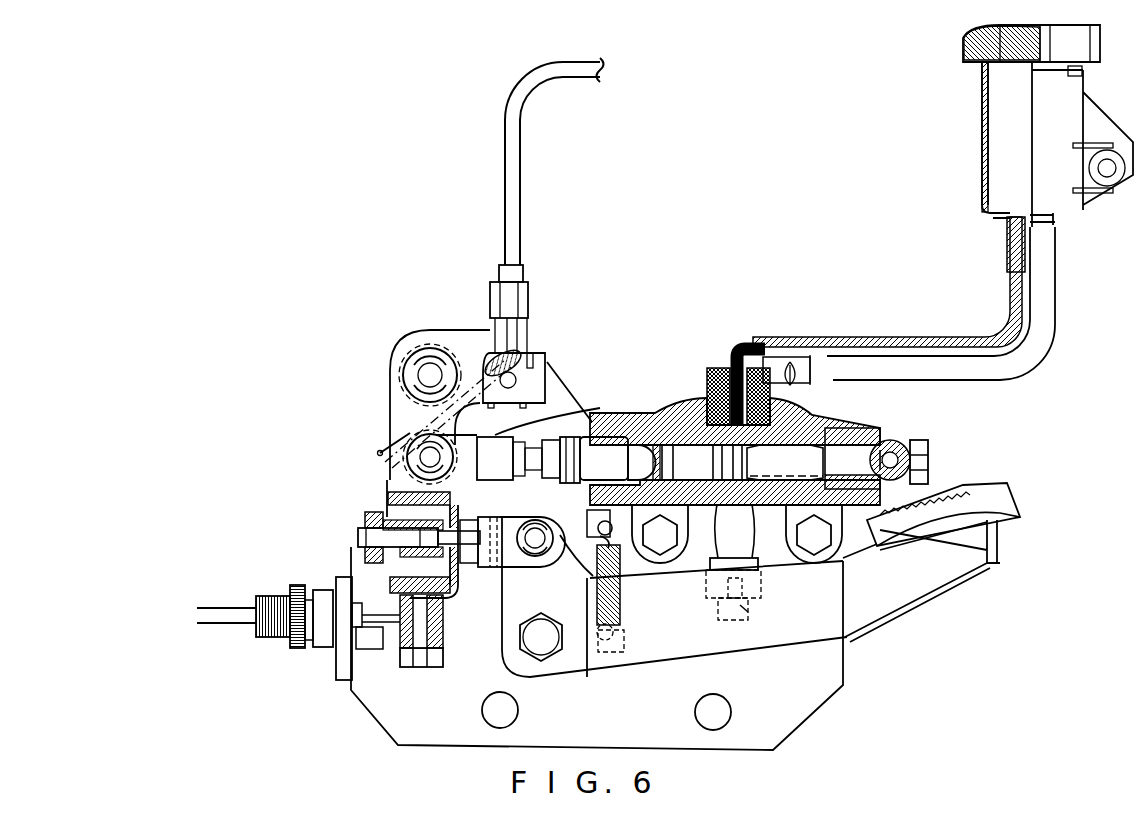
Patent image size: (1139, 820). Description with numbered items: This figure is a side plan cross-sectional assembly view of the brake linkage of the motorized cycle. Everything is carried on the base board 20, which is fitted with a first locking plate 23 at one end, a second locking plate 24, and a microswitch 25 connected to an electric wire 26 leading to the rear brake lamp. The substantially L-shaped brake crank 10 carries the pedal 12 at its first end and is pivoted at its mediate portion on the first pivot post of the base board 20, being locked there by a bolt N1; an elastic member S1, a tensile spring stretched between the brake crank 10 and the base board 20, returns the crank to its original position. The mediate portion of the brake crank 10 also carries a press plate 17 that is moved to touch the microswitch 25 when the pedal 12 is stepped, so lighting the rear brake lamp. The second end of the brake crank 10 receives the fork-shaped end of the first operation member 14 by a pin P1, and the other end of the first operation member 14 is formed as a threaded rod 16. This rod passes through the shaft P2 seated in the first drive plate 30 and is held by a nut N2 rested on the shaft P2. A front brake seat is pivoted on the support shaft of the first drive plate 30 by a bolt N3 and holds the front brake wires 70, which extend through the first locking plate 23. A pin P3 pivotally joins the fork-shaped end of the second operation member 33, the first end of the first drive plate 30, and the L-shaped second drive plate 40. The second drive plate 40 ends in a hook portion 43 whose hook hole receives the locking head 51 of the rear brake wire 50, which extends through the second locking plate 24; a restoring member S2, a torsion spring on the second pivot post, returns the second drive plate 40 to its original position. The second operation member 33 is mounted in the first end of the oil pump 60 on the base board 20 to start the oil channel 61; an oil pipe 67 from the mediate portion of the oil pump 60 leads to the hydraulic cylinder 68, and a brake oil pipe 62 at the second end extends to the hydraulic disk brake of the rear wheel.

The brake crank 10 is at (671, 648).
The pedal 12 is at (993, 483).
The first operation member 14 is at (465, 565).
The threaded rod 16 is at (358, 537).
The press plate 17 is at (732, 627).
The base board 20 is at (828, 663).
The first locking plate 23 is at (340, 660).
The second locking plate 24 is at (533, 345).
The microswitch 25 is at (740, 607).
The electric wire 26 is at (807, 345).
The first drive plate 30 is at (393, 492).
The second operation member 33 is at (612, 440).
The second drive plate 40 is at (462, 352).
The hook portion 43 is at (535, 378).
The rear brake wire 50 is at (512, 142).
The locking head 51 is at (530, 350).
The oil pump 60 is at (680, 425).
The oil channel 61 is at (855, 463).
The brake oil pipe 62 is at (918, 497).
The oil pipe 67 is at (742, 343).
The hydraulic cylinder 68 is at (983, 133).
The front brake wire 70 is at (215, 612).
The bolt N1 is at (540, 650).
The nut N2 is at (368, 518).
The bolt N3 is at (420, 662).
The pin P1 is at (536, 534).
The shaft P2 is at (487, 530).
The pin P3 is at (404, 437).
The elastic member S1 is at (596, 582).
The restoring member S2 is at (413, 350).